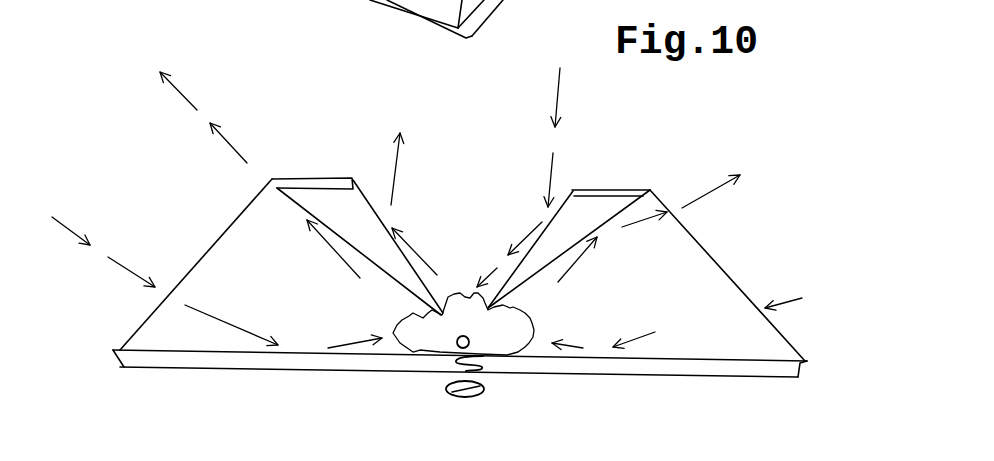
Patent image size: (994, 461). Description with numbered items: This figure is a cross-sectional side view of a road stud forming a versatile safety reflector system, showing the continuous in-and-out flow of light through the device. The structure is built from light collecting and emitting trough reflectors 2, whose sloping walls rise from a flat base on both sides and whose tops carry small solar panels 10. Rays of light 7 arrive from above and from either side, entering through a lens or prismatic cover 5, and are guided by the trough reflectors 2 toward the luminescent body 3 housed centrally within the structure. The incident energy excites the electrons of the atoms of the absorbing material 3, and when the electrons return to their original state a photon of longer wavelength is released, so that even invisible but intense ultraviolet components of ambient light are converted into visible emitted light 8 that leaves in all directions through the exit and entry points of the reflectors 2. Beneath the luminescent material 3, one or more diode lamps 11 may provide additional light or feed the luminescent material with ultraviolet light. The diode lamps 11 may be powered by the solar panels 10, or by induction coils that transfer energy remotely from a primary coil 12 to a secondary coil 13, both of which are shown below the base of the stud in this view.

The trough reflectors 2 is at (247, 220).
The luminescent body 3 is at (460, 290).
The lens or prismatic cover 5 is at (202, 247).
The incoming rays of light 7 is at (72, 213).
The emitted light 8 is at (178, 78).
The solar panels 10 is at (292, 173).
The diode lamps 11 is at (457, 349).
The primary coil 12 is at (445, 405).
The secondary coil 13 is at (492, 365).